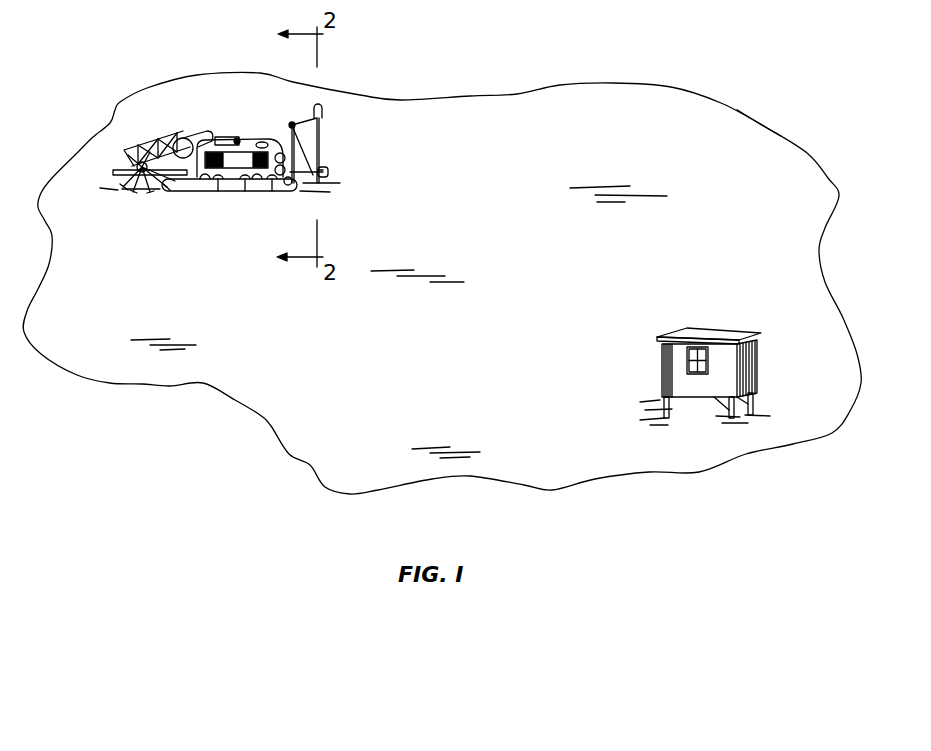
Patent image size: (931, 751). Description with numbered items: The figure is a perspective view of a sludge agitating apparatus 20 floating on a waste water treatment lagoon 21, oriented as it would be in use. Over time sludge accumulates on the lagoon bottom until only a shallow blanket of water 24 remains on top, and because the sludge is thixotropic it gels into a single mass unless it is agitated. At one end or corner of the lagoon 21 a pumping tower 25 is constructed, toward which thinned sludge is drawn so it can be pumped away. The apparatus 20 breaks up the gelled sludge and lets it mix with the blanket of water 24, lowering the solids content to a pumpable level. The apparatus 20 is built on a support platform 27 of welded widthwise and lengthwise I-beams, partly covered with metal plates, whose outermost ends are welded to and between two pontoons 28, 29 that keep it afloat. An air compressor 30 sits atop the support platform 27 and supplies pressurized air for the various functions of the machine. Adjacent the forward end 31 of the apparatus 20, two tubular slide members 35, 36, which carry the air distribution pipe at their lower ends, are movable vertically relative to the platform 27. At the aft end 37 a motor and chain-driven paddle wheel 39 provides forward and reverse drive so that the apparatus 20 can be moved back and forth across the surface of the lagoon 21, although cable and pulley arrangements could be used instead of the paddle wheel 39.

The sludge agitating apparatus 20 is at (322, 100).
The lagoon 21 is at (703, 485).
The blanket of water 24 is at (753, 144).
The pumping tower 25 is at (753, 357).
The support platform 27 is at (307, 190).
The pontoon 28 is at (230, 188).
The pontoon 29 is at (325, 170).
The air compressor 30 is at (227, 138).
The forward end 31 is at (320, 197).
The tubular slide member 35 is at (290, 141).
The tubular slide member 36 is at (317, 140).
The aft end 37 is at (175, 198).
The paddle wheel 39 is at (157, 137).